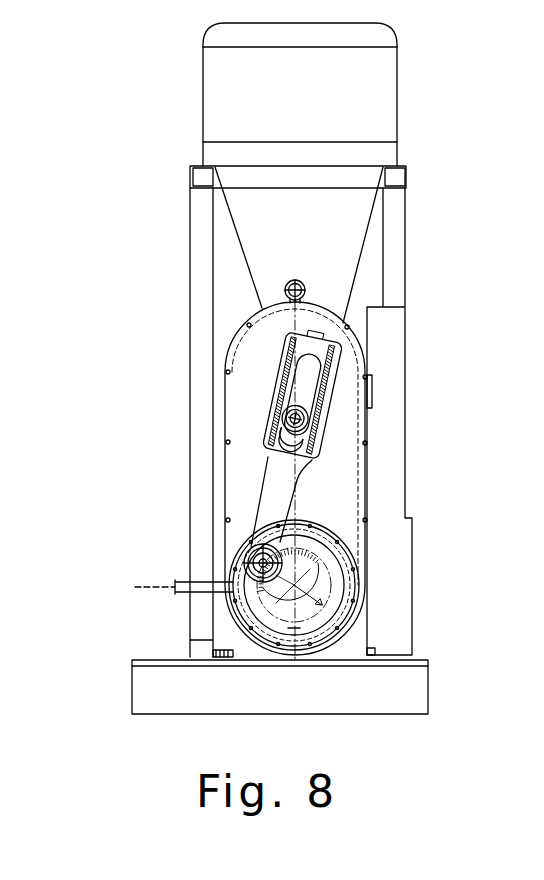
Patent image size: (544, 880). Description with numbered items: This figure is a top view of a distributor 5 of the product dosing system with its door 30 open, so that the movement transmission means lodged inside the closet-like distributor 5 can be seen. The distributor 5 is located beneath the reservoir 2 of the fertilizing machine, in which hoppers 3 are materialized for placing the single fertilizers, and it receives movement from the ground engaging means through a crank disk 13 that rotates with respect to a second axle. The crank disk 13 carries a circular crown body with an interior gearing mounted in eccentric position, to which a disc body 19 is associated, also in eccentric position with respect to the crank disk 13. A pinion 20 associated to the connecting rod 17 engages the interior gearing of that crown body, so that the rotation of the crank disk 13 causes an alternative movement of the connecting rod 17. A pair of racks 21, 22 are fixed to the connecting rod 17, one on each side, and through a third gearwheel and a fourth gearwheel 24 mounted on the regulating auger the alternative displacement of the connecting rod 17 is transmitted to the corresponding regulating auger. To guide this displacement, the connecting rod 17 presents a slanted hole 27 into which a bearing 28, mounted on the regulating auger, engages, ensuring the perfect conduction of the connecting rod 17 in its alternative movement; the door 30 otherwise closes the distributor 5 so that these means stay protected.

The reservoir 2 is at (397, 93).
The hopper 3 is at (233, 223).
The distributor 5 is at (347, 323).
The crank disk 13 is at (337, 560).
The connecting rod 17 is at (268, 457).
The disc body 19 is at (302, 580).
The pinion 20 is at (247, 563).
The rack 21 is at (297, 352).
The rack 22 is at (327, 365).
The fourth gearwheel 24 is at (300, 402).
The slanted hole 27 is at (287, 379).
The bearing 28 is at (287, 427).
The door 30 is at (378, 385).